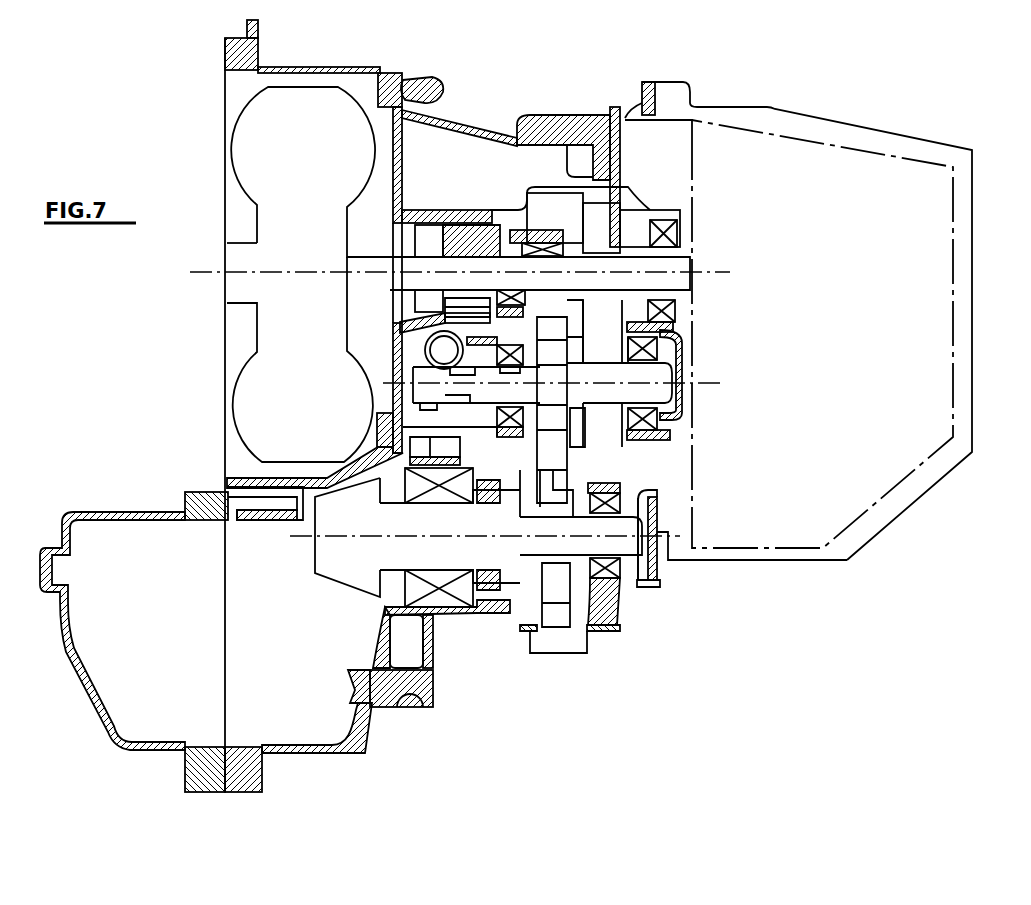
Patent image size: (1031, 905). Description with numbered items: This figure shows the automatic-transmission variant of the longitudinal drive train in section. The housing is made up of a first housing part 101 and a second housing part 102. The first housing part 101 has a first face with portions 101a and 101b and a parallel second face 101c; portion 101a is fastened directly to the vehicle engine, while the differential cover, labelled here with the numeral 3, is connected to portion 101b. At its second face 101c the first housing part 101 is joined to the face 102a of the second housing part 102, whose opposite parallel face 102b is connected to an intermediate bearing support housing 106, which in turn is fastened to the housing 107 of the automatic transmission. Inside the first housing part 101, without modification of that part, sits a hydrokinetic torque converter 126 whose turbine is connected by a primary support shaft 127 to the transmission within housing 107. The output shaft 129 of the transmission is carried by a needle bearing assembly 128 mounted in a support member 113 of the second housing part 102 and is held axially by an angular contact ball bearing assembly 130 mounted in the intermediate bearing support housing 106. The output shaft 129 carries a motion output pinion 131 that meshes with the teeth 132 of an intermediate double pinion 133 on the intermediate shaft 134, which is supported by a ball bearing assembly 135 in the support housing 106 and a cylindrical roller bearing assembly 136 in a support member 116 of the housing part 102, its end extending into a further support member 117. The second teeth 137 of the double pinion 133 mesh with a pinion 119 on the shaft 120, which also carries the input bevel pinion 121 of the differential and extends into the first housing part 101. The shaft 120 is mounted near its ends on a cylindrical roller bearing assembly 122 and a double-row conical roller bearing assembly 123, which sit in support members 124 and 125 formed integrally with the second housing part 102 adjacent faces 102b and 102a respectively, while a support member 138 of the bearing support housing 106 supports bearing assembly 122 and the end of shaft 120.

The cover 3 is at (60, 652).
The first housing part 101 is at (310, 65).
The first face portion 101a is at (224, 50).
The first face portion 101b is at (228, 520).
The second face 101c is at (395, 75).
The second housing part 102 is at (478, 122).
The face 102a is at (443, 86).
The face 102b is at (600, 115).
The intermediate bearing support housing 106 is at (622, 102).
The housing of the automatic transmission 107 is at (830, 122).
The support member 113 is at (497, 292).
The support member 116 is at (490, 403).
The support member 117 is at (413, 385).
The pinion 119 is at (562, 610).
The shaft 120 is at (305, 545).
The input bevel pinion 121 is at (338, 575).
The cylindrical roller bearing assembly 122 is at (640, 500).
The bearing assembly with a double row of conical rollers 123 is at (466, 493).
The support member 124 is at (650, 488).
The support member 125 is at (405, 703).
The hydrokinetic torque converter 126 is at (268, 383).
The primary support shaft 127 is at (366, 280).
The needle bearing assembly 128 is at (540, 243).
The output shaft 129 is at (688, 250).
The angular contact ball bearing assembly 130 is at (663, 225).
The motion output pinion 131 is at (605, 228).
The teeth 132 is at (668, 345).
The intermediate double pinion 133 is at (595, 403).
The intermediate shaft 134 is at (706, 383).
The ball bearing assembly 135 is at (660, 420).
The cylindrical roller bearing assembly 136 is at (513, 408).
The second teeth 137 is at (560, 427).
The support member 138 is at (660, 566).